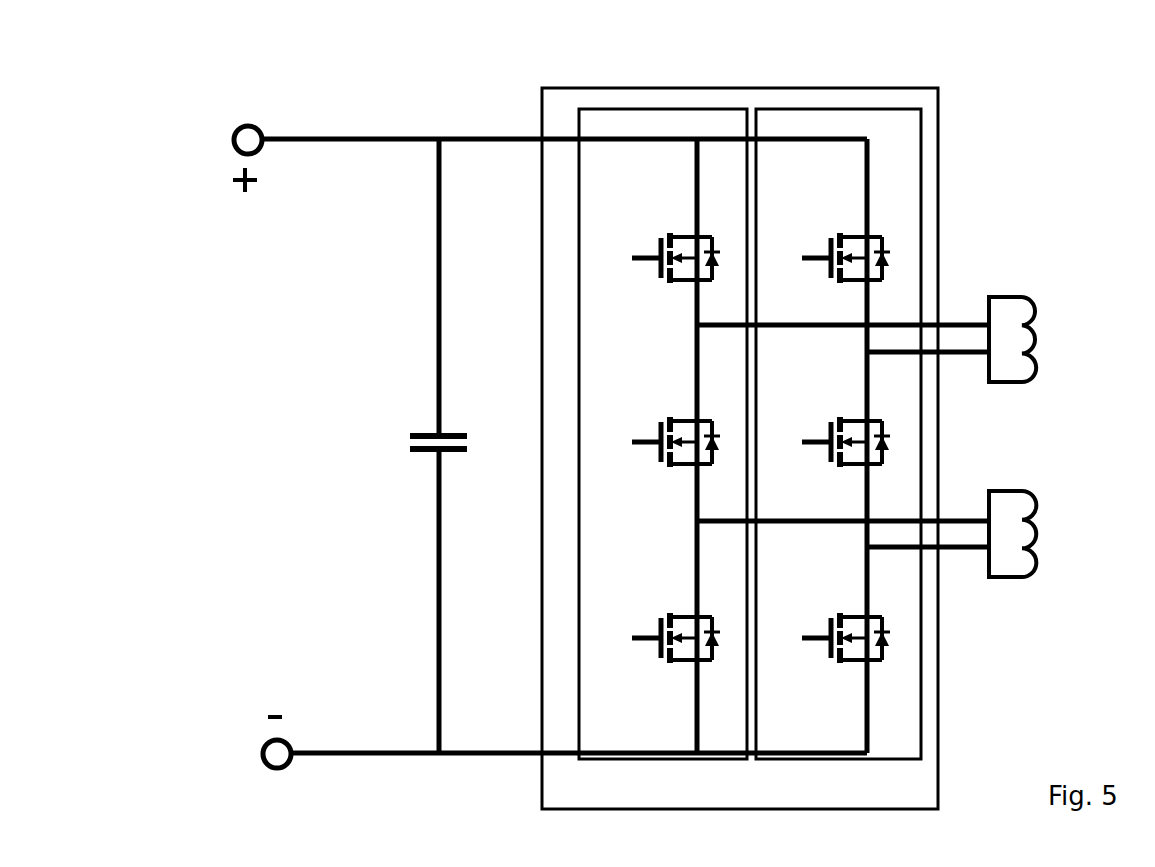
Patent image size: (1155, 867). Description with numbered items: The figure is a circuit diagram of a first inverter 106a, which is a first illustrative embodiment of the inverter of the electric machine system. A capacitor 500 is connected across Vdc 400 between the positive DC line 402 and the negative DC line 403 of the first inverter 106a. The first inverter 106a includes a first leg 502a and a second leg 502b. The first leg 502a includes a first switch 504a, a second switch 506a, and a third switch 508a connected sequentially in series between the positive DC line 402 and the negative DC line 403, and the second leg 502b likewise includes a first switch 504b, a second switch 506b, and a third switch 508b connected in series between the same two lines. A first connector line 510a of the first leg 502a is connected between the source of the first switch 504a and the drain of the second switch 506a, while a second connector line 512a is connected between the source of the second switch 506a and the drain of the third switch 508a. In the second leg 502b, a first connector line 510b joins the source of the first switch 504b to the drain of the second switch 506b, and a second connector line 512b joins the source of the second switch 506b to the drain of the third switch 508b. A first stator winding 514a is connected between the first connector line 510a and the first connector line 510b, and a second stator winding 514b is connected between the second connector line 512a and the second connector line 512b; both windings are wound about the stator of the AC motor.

The Vdc 400 is at (272, 469).
The positive DC line 402 is at (472, 143).
The negative DC line 403 is at (497, 751).
The capacitor 500 is at (432, 434).
The first inverter 106a is at (612, 797).
The first leg 502a is at (643, 734).
The second leg 502b is at (816, 734).
The first switch 504a is at (660, 232).
The first switch 504b is at (831, 232).
The second switch 506a is at (658, 418).
The second switch 506b is at (830, 418).
The third switch 508a is at (658, 612).
The third switch 508b is at (830, 612).
The first connector line 510a is at (960, 323).
The first connector line 510b is at (972, 356).
The second connector line 512a is at (958, 519).
The second connector line 512b is at (972, 552).
The first stator winding 514a is at (1037, 325).
The second stator winding 514b is at (1037, 521).